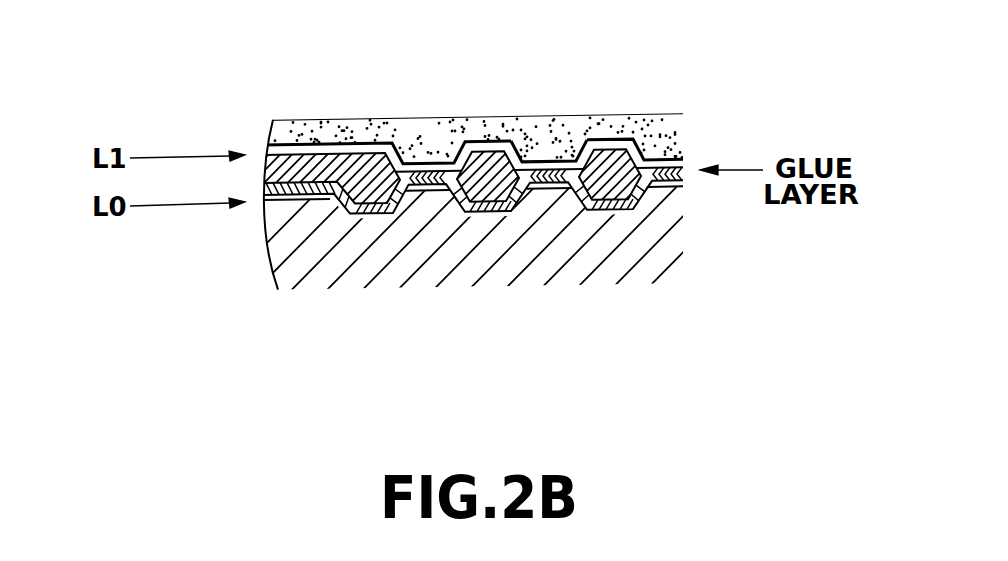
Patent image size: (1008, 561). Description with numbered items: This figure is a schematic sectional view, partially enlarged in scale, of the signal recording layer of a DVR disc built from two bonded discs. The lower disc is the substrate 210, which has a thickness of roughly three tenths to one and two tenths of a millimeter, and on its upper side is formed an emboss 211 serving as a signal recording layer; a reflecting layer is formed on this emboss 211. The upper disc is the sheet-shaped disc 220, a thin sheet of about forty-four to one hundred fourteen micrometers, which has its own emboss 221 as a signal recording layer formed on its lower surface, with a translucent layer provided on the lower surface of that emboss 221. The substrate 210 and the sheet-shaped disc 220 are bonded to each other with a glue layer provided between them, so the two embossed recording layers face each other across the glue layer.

The substrate 210 is at (318, 284).
The emboss 211 is at (612, 228).
The sheet-shaped disc 220 is at (405, 118).
The emboss 221 is at (547, 152).